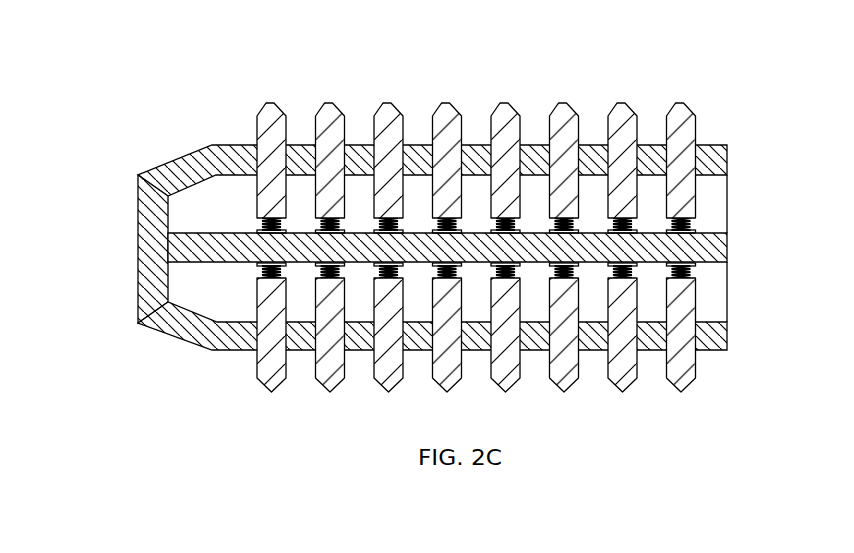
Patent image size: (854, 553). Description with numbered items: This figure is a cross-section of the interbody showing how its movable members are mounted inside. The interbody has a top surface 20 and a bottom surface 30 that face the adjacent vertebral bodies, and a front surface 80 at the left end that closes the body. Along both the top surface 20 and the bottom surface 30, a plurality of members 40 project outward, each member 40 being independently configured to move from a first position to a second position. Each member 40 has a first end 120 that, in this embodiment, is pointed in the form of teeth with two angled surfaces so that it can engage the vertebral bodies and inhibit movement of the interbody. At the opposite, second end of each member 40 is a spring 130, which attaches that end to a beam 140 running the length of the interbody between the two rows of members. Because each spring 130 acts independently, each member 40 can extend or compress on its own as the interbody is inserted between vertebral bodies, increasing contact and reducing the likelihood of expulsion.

The top surface 20 is at (228, 145).
The bottom surface 30 is at (205, 350).
The members 40 is at (500, 108).
The front surface 80 is at (138, 288).
The first end 120 is at (273, 113).
The spring 130 is at (522, 232).
The beam 140 is at (187, 248).